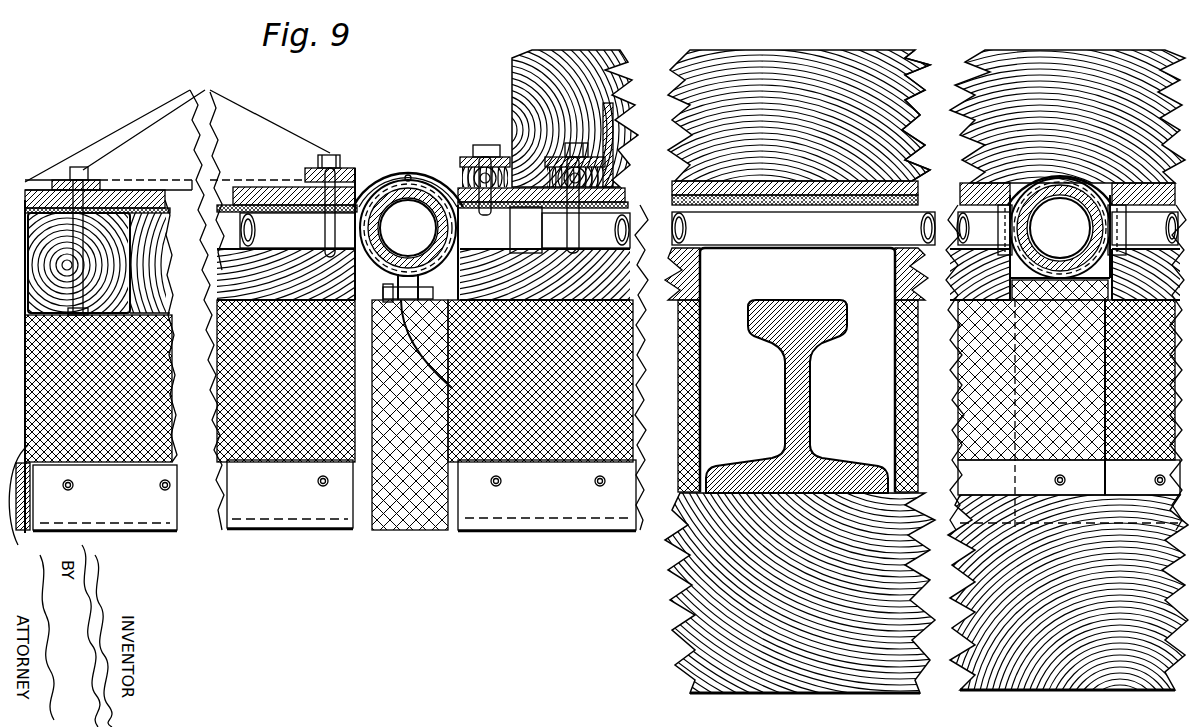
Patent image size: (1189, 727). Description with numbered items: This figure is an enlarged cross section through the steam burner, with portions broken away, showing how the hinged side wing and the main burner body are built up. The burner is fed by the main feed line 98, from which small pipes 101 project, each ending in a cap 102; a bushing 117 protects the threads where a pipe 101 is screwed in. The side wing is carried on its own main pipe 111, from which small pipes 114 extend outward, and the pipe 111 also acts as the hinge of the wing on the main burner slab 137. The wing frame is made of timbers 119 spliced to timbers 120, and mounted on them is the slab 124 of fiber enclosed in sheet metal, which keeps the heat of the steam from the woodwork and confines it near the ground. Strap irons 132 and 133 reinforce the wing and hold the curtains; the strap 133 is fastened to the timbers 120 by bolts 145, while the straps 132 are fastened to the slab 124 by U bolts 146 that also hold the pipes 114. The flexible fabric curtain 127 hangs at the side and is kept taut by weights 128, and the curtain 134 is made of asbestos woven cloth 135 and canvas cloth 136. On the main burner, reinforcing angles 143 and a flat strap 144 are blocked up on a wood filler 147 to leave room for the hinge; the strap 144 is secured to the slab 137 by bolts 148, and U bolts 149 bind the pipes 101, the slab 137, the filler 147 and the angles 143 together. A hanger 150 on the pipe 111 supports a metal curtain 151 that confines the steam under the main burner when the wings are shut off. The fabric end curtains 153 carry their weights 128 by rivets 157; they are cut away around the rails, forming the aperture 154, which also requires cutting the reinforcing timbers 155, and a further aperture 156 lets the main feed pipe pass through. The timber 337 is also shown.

The main feed line 98 is at (1092, 233).
The small pipes 101 is at (860, 230).
The cap 102 is at (526, 230).
The main pipes 111 is at (398, 219).
The small pipes 114 is at (297, 230).
The bushing 117 is at (916, 183).
The timbers 119 is at (212, 316).
The timbers 120 is at (30, 200).
The slab 124 is at (145, 192).
The flexible fabric curtain 127 is at (26, 541).
The weights 128 is at (33, 499).
The strap irons 132 is at (330, 155).
The strap iron 133 is at (97, 182).
The curtain 134 is at (392, 177).
The asbestos woven cloth 135 is at (430, 178).
The canvas cloth 136 is at (445, 190).
The main burner slab 137 is at (937, 182).
The reenforcing angles 143 is at (630, 105).
The flat strap 144 is at (484, 145).
The bolts 145 is at (78, 167).
The U bolts 146 is at (345, 168).
The wood filler 147 is at (462, 166).
The bolts 148 is at (490, 157).
The U bolts 149 is at (571, 143).
The hanger 150 is at (352, 305).
The metal curtain 151 is at (441, 352).
The end curtains 153 is at (895, 387).
The aperture 154 is at (797, 370).
The timbers 155 is at (700, 287).
The aperture 156 is at (1007, 318).
The rivets 157 is at (503, 481).
The wooden sill 337 is at (822, 52).